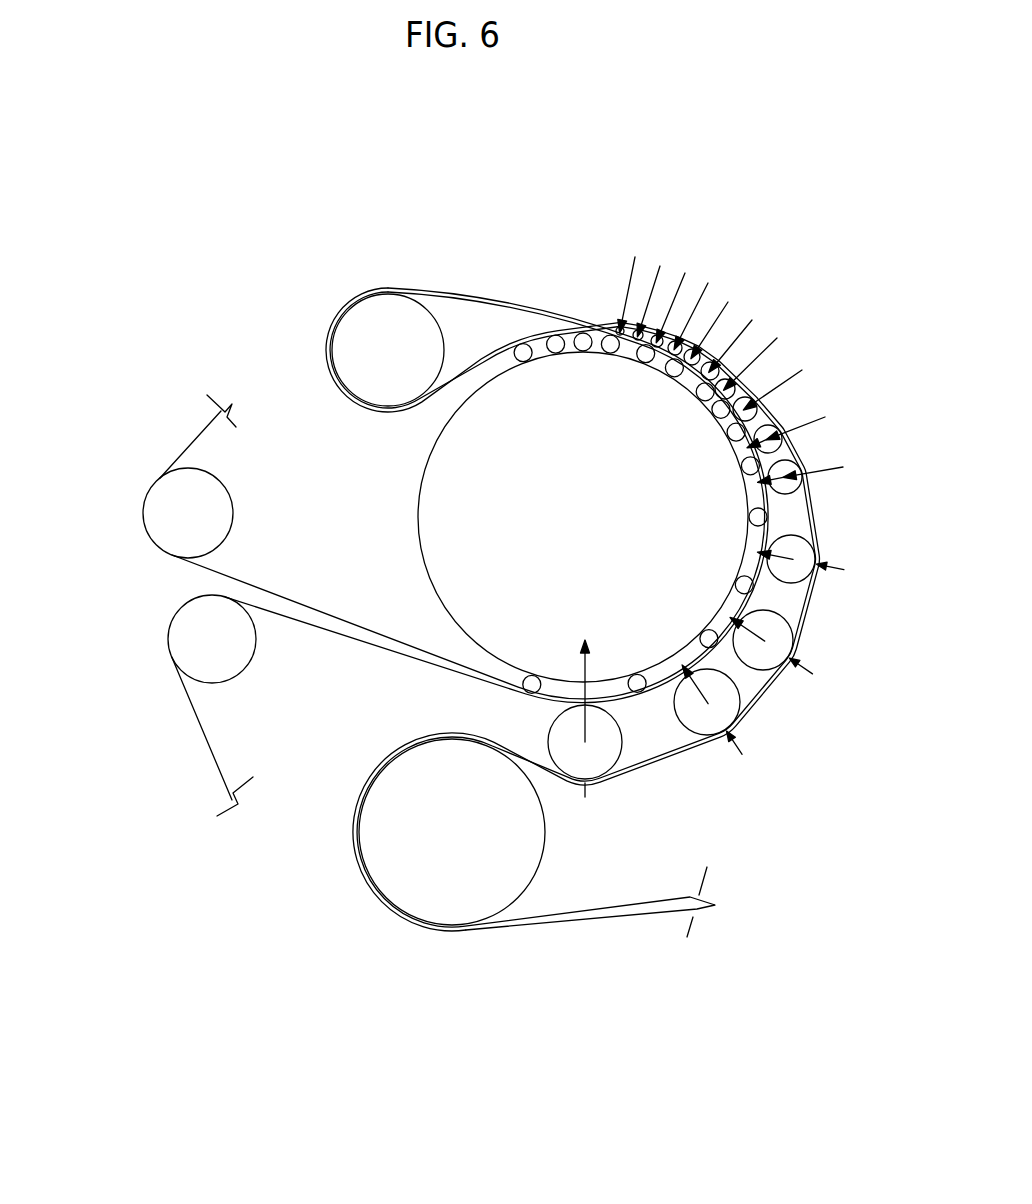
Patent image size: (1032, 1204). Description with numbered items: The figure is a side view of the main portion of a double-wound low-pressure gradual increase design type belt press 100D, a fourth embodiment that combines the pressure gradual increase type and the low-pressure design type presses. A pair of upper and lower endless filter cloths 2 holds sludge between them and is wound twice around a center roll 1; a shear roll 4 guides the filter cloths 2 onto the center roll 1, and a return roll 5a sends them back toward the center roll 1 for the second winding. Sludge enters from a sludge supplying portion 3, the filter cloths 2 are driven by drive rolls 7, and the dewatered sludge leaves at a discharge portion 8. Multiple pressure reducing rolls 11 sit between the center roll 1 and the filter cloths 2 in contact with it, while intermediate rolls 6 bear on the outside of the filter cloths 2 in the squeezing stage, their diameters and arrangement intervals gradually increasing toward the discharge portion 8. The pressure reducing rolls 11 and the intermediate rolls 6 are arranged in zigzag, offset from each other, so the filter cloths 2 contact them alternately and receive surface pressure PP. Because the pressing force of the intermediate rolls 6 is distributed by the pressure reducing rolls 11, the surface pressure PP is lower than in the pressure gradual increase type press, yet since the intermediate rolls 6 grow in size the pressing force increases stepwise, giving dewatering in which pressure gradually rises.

The double-wound low-pressure gradual increase design type belt press 100D is at (731, 162).
The center roll 1 is at (440, 470).
The pressure reducing rolls 11 is at (749, 520).
The return roll 5a is at (387, 300).
The filter cloths 2 is at (627, 908).
The intermediate rolls 6 is at (730, 750).
The shear roll 4 is at (448, 910).
The sludge supplying portion 3 is at (741, 885).
The drive rolls 7 is at (218, 532).
The discharge portion 8 is at (111, 612).
The surface pressure PP is at (725, 302).